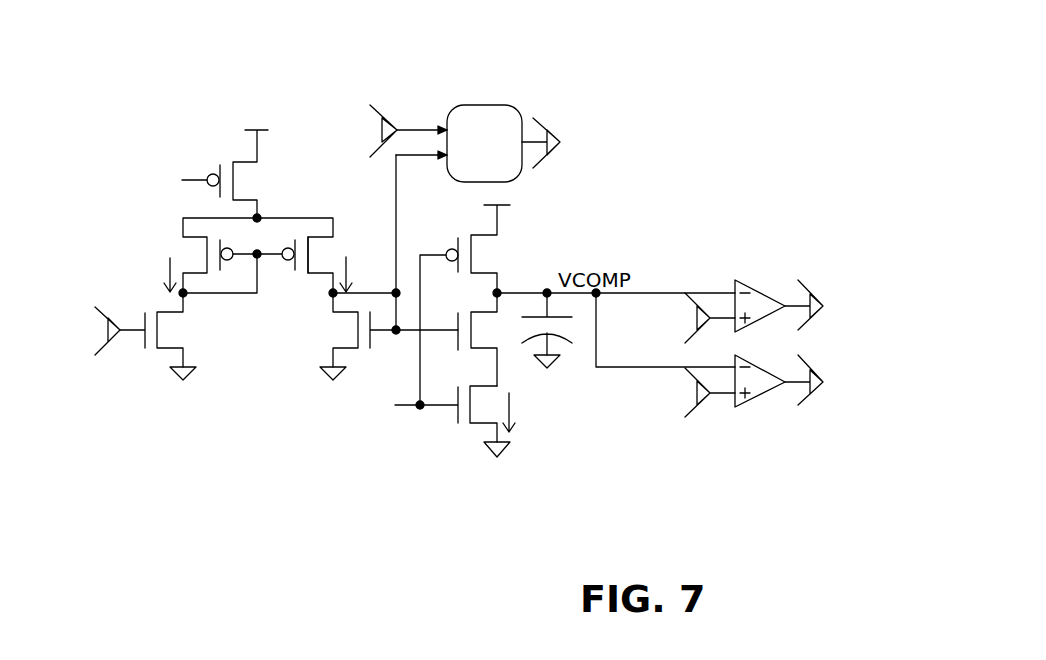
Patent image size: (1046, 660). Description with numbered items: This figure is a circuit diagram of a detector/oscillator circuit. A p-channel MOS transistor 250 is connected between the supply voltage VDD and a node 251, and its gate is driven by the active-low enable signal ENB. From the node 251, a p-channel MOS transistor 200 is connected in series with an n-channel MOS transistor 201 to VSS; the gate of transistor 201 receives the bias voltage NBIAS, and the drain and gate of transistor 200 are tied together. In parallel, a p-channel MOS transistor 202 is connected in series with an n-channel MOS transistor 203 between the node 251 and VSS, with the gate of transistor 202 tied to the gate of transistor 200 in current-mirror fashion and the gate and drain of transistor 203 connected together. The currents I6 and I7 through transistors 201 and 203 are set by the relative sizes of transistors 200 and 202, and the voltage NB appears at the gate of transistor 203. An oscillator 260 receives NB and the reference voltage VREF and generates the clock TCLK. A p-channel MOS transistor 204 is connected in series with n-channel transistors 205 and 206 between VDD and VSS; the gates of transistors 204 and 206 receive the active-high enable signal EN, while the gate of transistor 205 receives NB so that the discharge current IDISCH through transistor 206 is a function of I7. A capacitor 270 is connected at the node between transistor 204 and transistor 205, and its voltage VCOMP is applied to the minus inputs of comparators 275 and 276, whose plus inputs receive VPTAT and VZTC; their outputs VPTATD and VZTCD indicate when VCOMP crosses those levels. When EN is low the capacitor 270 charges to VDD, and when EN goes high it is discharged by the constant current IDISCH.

The p-channel MOS transistor 200 is at (188, 240).
The n-channel MOS transistor 201 is at (158, 350).
The p-channel MOS transistor 202 is at (307, 273).
The n-channel MOS transistor 203 is at (358, 325).
The p-channel MOS transistor 204 is at (468, 252).
The n-channel transistor 205 is at (473, 333).
The n-channel transistor 206 is at (478, 424).
The p-channel MOS transistor 250 is at (233, 162).
The node 251 is at (257, 218).
The oscillator 260 is at (487, 112).
The capacitor 270 is at (562, 325).
The comparator 275 is at (750, 283).
The comparator 276 is at (765, 380).